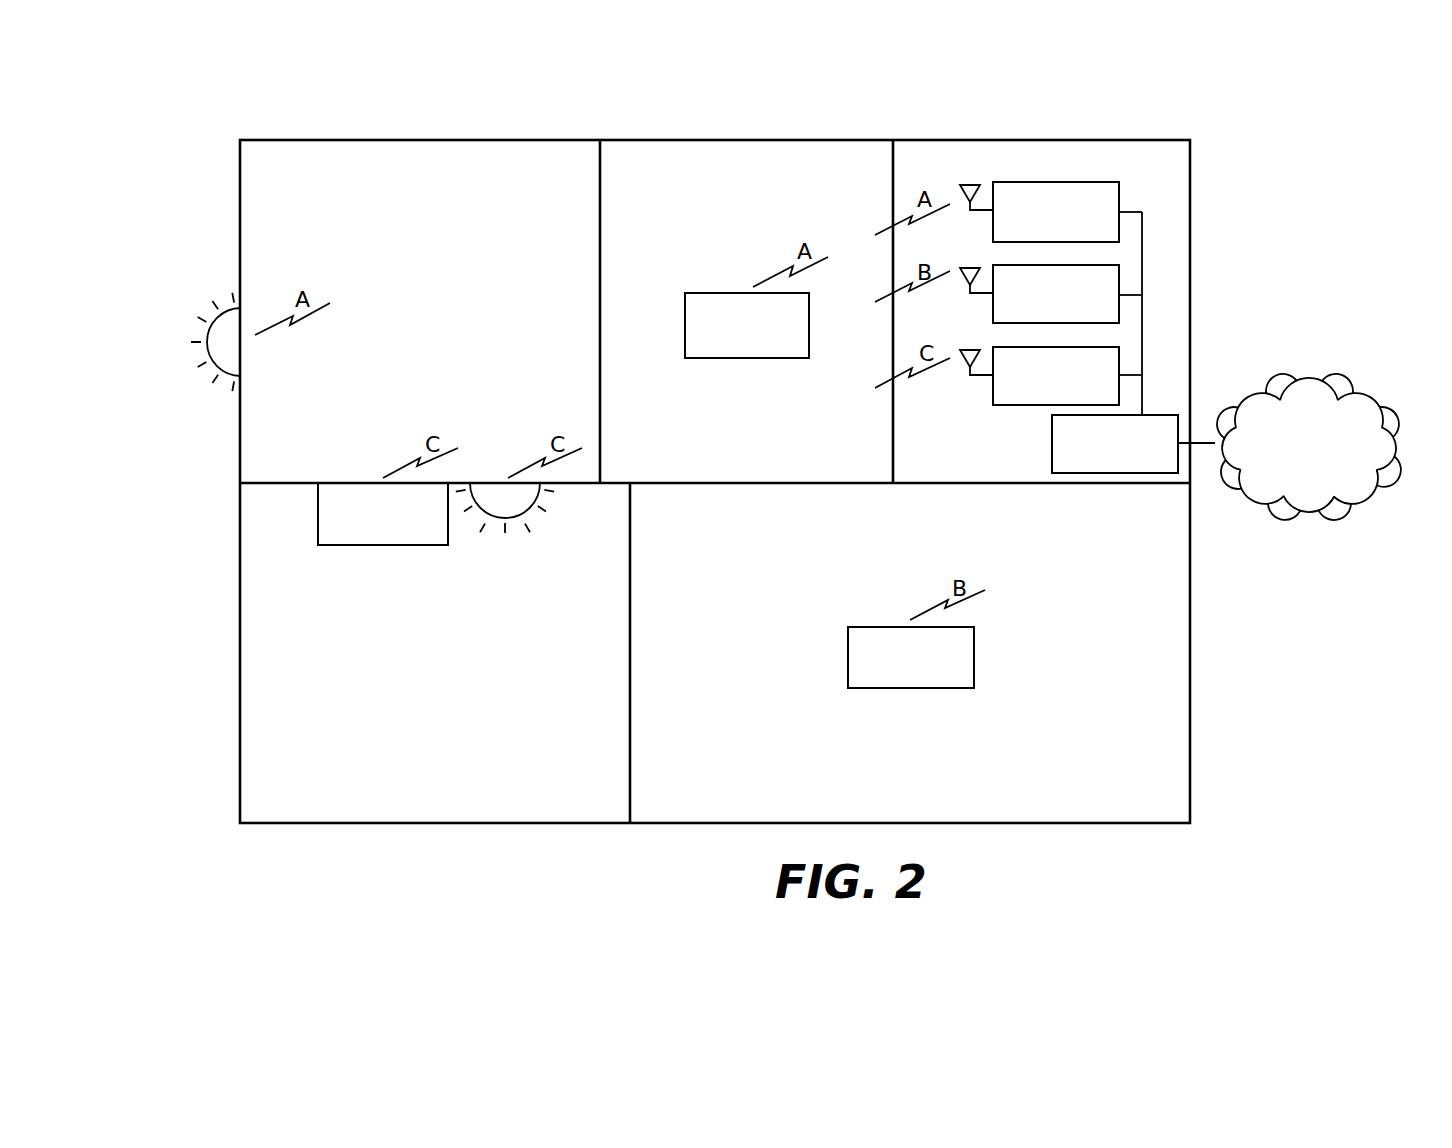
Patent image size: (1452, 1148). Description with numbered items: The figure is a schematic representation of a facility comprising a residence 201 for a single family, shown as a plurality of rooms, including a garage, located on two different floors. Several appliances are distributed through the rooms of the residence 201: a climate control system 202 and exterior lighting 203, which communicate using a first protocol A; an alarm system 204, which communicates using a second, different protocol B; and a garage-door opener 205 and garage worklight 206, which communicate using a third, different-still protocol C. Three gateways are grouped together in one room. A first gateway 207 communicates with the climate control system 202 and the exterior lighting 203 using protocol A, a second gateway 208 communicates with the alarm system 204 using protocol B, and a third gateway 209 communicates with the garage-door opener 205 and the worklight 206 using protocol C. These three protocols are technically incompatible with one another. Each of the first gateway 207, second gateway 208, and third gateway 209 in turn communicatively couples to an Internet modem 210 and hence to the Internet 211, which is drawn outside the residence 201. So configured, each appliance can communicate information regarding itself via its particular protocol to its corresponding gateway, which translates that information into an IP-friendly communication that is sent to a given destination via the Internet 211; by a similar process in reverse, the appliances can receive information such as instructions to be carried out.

The residence 201 is at (688, 140).
The climate control system 202 is at (700, 358).
The exterior lighting 203 is at (222, 372).
The alarm system 204 is at (868, 688).
The garage-door opener 205 is at (333, 545).
The garage worklight 206 is at (516, 518).
The first gateway 207 is at (1003, 185).
The second gateway 208 is at (1003, 268).
The third gateway 209 is at (1003, 350).
The Internet modem 210 is at (1052, 443).
The Internet 211 is at (1342, 372).